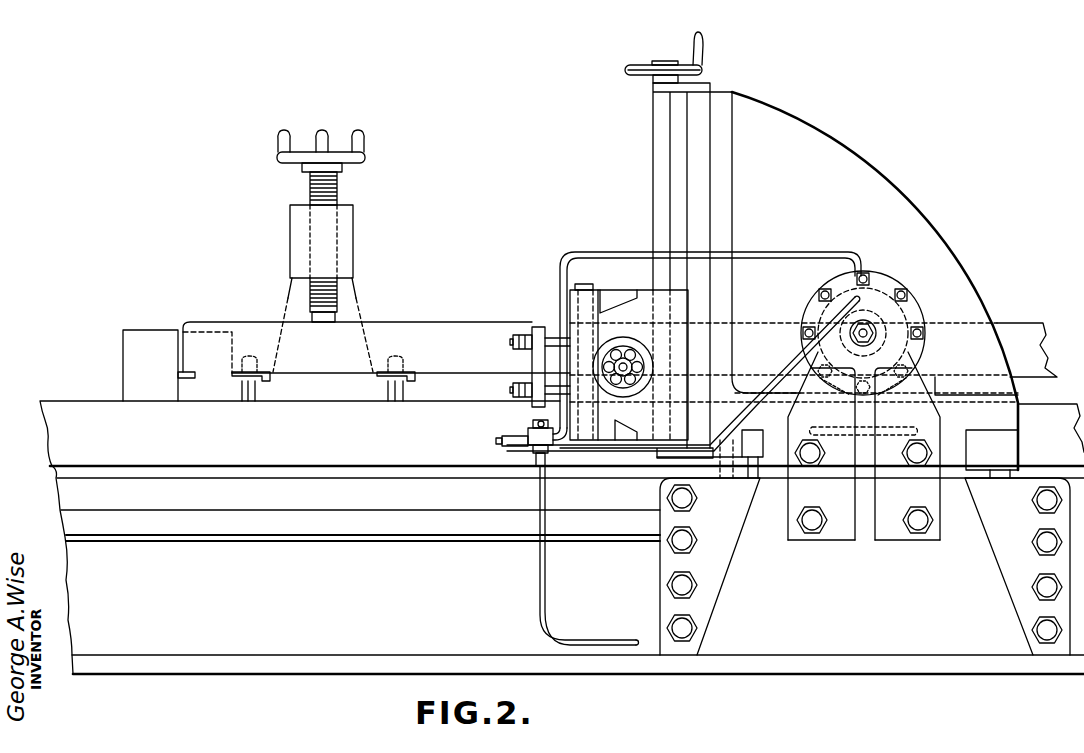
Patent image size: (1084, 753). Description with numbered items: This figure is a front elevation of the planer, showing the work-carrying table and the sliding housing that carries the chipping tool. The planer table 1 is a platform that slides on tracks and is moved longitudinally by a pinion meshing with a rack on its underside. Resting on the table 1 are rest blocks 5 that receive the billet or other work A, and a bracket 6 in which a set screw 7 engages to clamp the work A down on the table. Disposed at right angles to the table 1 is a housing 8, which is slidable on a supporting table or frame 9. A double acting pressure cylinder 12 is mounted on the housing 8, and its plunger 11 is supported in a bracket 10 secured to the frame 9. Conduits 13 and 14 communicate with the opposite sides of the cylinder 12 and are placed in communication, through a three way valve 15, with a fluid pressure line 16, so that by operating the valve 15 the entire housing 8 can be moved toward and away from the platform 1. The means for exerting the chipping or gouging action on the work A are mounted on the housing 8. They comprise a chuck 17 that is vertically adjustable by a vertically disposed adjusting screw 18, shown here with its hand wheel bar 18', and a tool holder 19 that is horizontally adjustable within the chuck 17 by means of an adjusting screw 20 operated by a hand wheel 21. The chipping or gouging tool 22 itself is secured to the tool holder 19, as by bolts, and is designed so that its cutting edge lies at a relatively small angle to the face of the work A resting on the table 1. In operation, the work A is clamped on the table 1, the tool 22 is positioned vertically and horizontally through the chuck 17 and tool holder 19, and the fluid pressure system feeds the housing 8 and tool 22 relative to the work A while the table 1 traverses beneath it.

The planer table 1 is at (41, 437).
The rest blocks 5 is at (148, 333).
The work A is at (440, 330).
The bracket 6 is at (350, 264).
The set screw 7 is at (345, 190).
The chipping or gouging tool 22 is at (540, 365).
The chuck 17 is at (648, 290).
The tool holder 19 is at (613, 290).
The adjusting screw 20 is at (618, 360).
The hand wheel 21 is at (612, 352).
The conduit 13 is at (588, 252).
The adjusting screw 18 is at (712, 226).
The handwheel bar 18' is at (691, 66).
The housing 8 is at (903, 210).
The double acting pressure cylinder 12 is at (895, 315).
The plunger 11 is at (873, 330).
The bracket 10 is at (895, 357).
The conduit 14 is at (779, 380).
The three way valve 15 is at (528, 453).
The fluid pressure line 16 is at (547, 601).
The supporting frame 9 is at (937, 650).